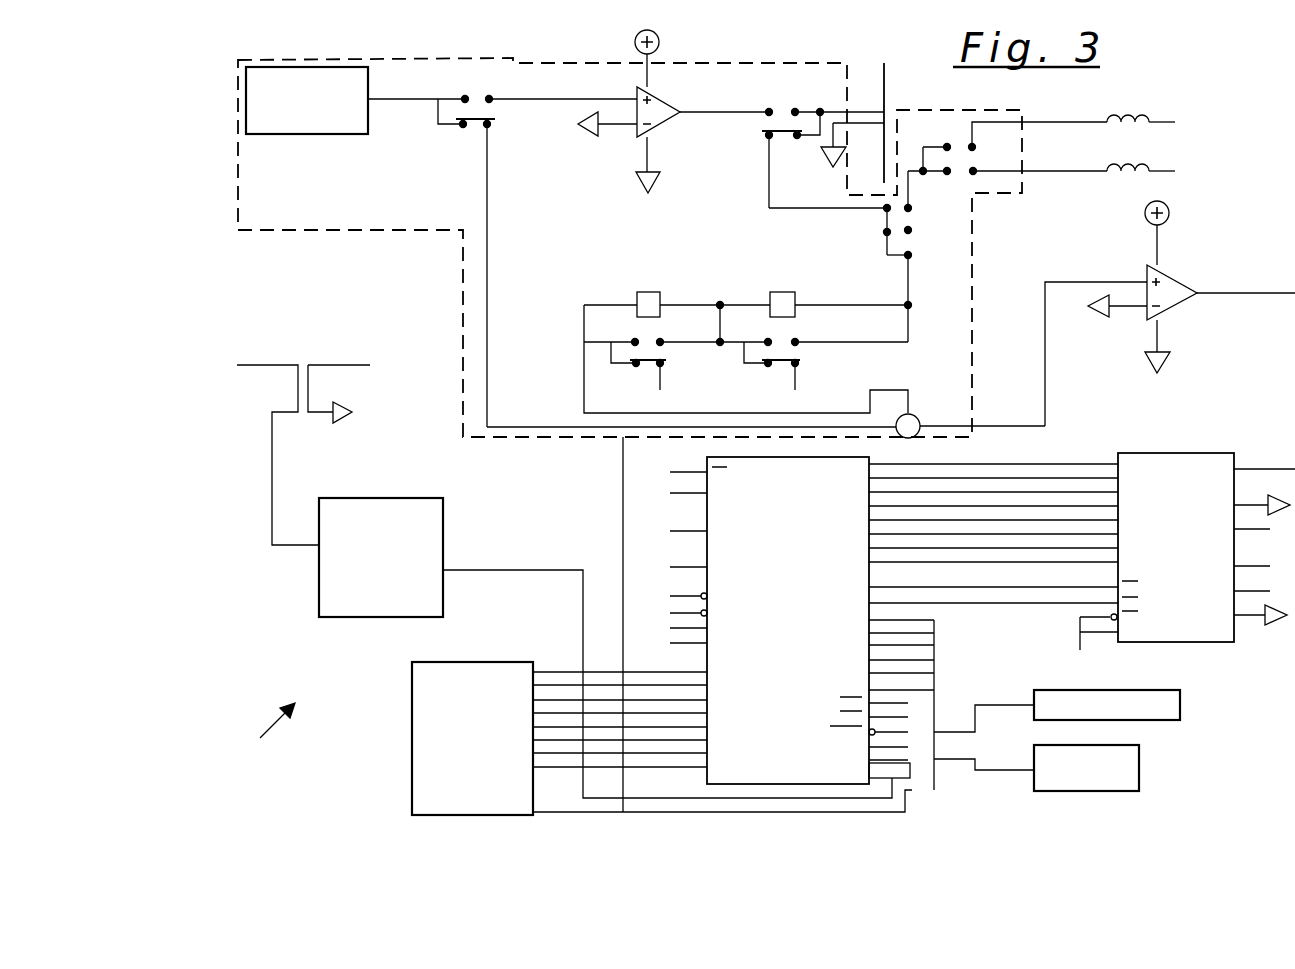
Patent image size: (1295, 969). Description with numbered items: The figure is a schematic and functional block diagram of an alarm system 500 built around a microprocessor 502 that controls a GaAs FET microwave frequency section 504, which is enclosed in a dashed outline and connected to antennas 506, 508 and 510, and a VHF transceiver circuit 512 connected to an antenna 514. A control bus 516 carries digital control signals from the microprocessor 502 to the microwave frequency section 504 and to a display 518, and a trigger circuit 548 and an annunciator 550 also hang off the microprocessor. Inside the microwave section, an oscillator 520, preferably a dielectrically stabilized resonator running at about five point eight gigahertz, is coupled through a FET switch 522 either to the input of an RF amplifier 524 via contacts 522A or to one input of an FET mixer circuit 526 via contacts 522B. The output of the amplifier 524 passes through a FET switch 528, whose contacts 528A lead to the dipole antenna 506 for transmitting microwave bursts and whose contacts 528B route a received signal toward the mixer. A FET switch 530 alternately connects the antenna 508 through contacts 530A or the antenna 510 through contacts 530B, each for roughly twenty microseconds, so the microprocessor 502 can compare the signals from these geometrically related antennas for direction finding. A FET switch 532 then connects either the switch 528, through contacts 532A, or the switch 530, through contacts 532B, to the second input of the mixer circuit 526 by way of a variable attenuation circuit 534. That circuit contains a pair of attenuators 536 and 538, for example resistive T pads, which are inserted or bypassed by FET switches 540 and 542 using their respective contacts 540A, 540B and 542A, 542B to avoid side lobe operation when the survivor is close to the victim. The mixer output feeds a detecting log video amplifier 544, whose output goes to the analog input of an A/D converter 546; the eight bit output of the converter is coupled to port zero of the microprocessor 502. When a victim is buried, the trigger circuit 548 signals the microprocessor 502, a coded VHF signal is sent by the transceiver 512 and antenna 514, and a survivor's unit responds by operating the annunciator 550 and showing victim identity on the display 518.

The alarm system 500 is at (254, 728).
The microprocessor 502 is at (815, 775).
The microwave frequency section 504 is at (463, 275).
The dipole antenna 506 is at (885, 63).
The antenna 508 is at (1150, 120).
The antenna 510 is at (1150, 170).
The VHF transceiver circuit 512 is at (345, 617).
The antenna 514 is at (272, 365).
The control bus 516 is at (680, 798).
The display 518 is at (420, 778).
The oscillator 520 is at (322, 134).
The FET switch 522 is at (477, 119).
The switch contacts 522A is at (465, 95).
The switch contacts 522B is at (490, 126).
The RF amplifier 524 is at (662, 104).
The FET mixer circuit 526 is at (915, 413).
The FET switch 528 is at (785, 140).
The switch contacts 528A is at (772, 108).
The switch contacts 528B is at (765, 133).
The FET switch 530 is at (957, 156).
The switch contacts 530A is at (950, 140).
The switch contacts 530B is at (975, 173).
The FET switch 532 is at (885, 208).
The switch contacts 532A is at (885, 232).
The switch contacts 532B is at (910, 230).
The variable attenuation circuit 534 is at (600, 305).
The attenuator 536 is at (787, 292).
The attenuator 538 is at (652, 292).
The FET switch 540 is at (785, 366).
The switch contacts 540A is at (797, 342).
The switch contacts 540B is at (800, 367).
The FET switch 542 is at (650, 366).
The switch contacts 542A is at (637, 342).
The switch contacts 542B is at (664, 366).
The detecting log video amplifier 544 is at (1165, 272).
The A/D converter 546 is at (1205, 635).
The trigger circuit 548 is at (1139, 768).
The annunciator 550 is at (1165, 720).